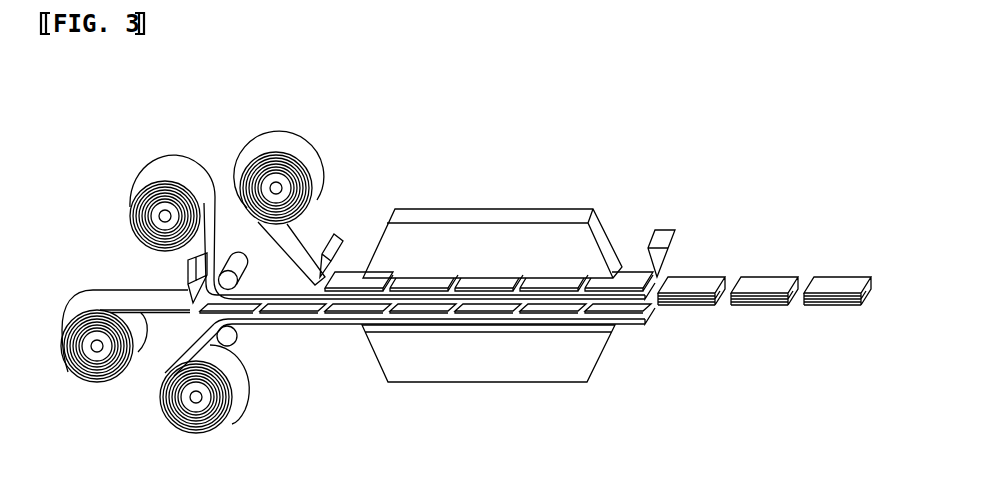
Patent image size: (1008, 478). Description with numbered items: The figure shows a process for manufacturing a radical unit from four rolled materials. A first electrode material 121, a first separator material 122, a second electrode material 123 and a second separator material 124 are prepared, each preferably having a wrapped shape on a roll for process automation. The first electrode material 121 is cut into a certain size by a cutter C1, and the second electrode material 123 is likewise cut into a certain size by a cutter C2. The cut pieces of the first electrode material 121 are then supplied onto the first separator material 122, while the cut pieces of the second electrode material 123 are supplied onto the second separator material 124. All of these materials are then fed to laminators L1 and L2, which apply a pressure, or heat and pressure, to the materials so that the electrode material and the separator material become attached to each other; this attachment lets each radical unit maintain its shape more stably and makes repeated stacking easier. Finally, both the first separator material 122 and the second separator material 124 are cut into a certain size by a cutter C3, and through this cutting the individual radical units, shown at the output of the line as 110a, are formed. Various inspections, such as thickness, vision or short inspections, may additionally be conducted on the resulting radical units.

The first electrode material 121 is at (288, 140).
The first separator material 122 is at (172, 167).
The second electrode material 123 is at (93, 290).
The second separator material 124 is at (240, 385).
The cutter C1 is at (342, 238).
The cutter C2 is at (185, 283).
The cutter C3 is at (663, 238).
The laminator L1 is at (490, 217).
The laminator L2 is at (480, 370).
The unit cell 110a is at (833, 305).